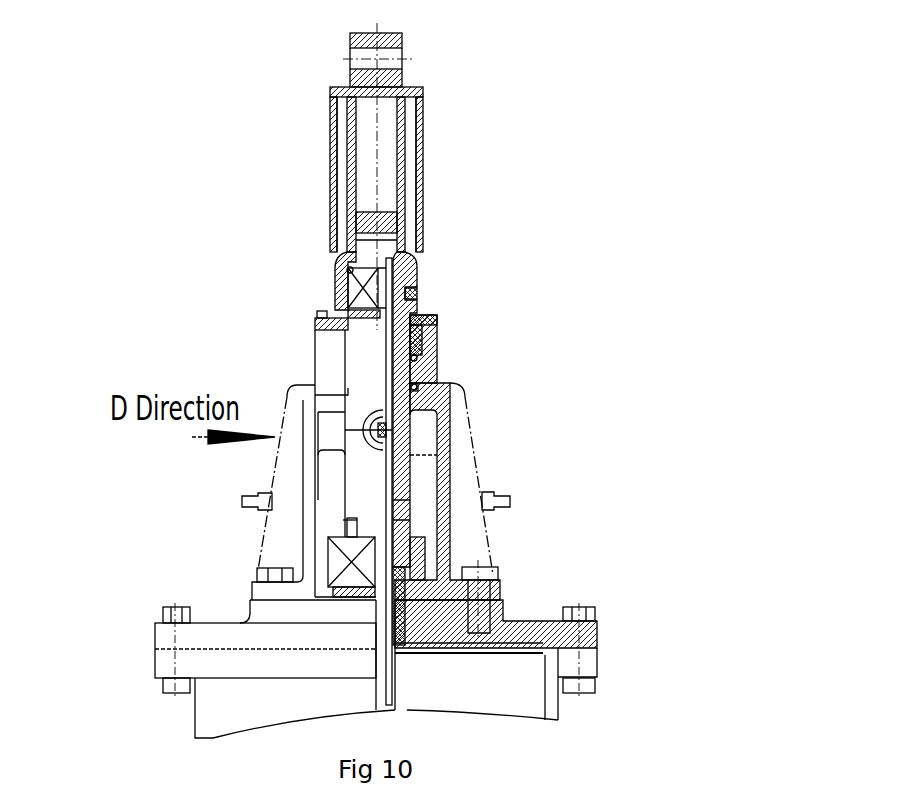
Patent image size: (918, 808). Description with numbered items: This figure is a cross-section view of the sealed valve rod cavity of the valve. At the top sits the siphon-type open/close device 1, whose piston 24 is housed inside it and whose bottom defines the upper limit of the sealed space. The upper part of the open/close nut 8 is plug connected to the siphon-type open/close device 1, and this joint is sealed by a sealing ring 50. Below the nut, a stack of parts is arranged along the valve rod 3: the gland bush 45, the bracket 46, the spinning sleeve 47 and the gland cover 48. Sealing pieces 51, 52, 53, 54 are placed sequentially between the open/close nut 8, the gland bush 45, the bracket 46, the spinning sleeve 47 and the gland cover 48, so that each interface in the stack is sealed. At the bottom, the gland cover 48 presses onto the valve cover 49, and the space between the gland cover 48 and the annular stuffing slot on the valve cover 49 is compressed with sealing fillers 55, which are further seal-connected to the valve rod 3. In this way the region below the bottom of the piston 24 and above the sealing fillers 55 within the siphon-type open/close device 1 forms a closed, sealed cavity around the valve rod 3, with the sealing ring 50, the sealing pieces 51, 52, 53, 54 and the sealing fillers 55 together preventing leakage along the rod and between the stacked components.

The siphon-type open/close device 1 is at (388, 78).
The piston 24 is at (398, 220).
The open/close nut 8 is at (412, 297).
The gland bush 45 is at (437, 318).
The bracket 46 is at (465, 389).
The spinning sleeve 47 is at (405, 527).
The gland cover 48 is at (413, 560).
The valve cover 49 is at (505, 599).
The valve rod 3 is at (388, 632).
The sealing ring 50 is at (340, 263).
The sealing piece 51 is at (380, 308).
The sealing piece 52 is at (386, 322).
The sealing piece 53 is at (395, 508).
The sealing piece 54 is at (275, 546).
The sealing fillers 55 is at (385, 605).